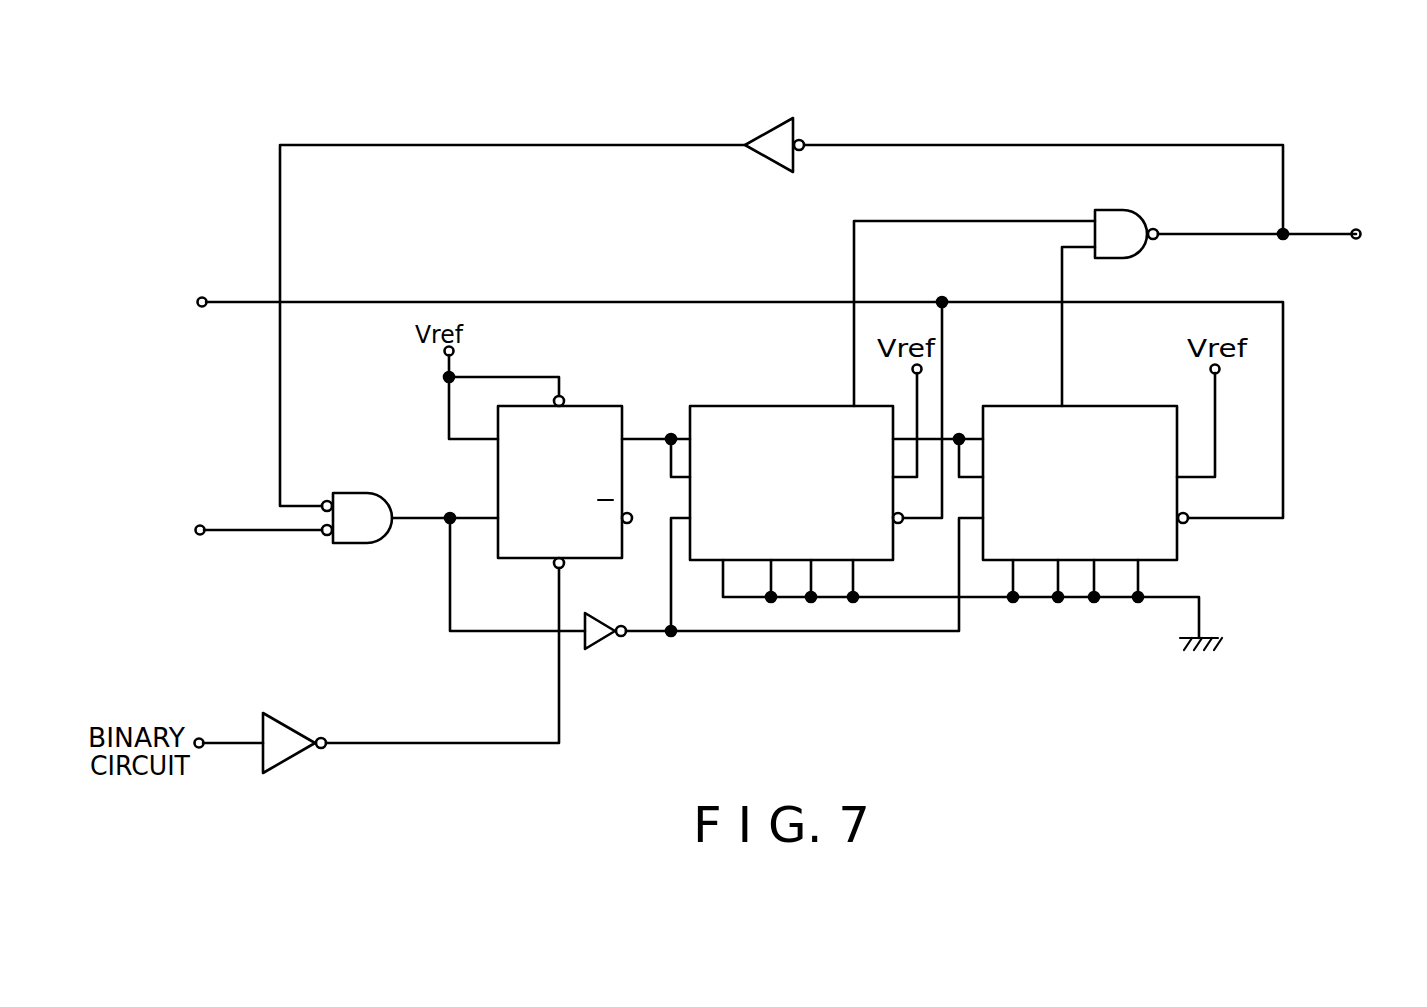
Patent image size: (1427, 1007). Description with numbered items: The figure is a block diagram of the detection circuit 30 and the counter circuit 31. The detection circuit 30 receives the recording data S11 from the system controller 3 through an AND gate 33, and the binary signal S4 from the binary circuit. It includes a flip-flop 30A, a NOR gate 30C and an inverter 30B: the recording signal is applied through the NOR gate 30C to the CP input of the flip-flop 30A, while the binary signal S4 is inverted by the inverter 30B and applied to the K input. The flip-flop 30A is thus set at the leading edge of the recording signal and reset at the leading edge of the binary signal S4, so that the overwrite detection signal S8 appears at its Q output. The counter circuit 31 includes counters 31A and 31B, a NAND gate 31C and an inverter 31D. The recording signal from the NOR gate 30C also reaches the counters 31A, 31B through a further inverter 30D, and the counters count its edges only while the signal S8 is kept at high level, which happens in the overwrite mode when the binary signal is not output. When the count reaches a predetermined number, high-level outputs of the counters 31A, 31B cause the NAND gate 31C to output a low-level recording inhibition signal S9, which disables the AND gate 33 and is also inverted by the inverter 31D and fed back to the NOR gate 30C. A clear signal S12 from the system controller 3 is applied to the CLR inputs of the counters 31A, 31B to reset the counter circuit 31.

The system controller 3 is at (166, 317).
The AND gate 33 is at (744, 392).
The detection circuit 30 is at (549, 374).
The flip-flop 30A is at (602, 405).
The inverter 30B is at (293, 727).
The NOR gate 30C is at (388, 502).
The inverter 30D is at (603, 638).
The counter circuit 31 is at (1203, 606).
The counter 31A is at (770, 405).
The counter 31B is at (1180, 545).
The NAND gate 31C is at (1135, 213).
The inverter 31D is at (775, 128).
The binary signal S4 is at (239, 742).
The overwrite detection signal S8 is at (648, 438).
The recording inhibition signal S9 is at (1320, 233).
The recording data S11 is at (248, 532).
The clear signal S12 is at (235, 302).